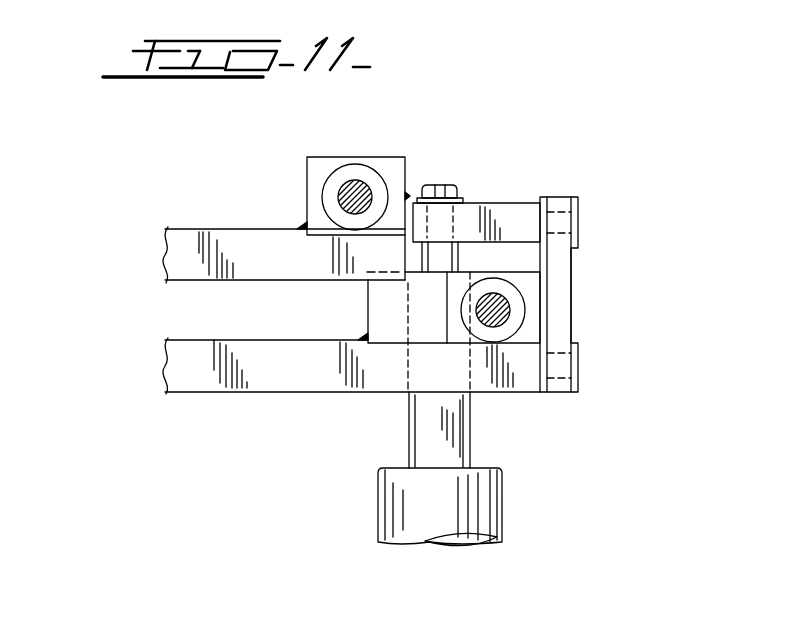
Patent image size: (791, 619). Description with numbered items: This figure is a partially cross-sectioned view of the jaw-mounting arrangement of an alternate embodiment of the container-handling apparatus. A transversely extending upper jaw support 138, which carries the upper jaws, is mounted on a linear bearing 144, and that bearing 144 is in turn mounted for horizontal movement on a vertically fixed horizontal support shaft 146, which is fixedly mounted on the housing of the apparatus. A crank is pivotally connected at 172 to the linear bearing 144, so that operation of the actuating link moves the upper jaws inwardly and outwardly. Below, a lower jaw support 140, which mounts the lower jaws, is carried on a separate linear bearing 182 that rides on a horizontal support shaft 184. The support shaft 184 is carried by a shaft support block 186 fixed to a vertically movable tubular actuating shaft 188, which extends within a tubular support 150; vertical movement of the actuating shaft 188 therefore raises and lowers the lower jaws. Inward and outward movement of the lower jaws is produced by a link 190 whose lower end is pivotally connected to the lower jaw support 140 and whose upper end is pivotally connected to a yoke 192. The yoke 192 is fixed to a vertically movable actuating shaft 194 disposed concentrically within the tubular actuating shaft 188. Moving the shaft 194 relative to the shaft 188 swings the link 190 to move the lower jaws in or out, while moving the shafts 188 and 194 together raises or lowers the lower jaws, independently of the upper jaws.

The upper jaw support 138 is at (250, 237).
The lower jaw support 140 is at (264, 383).
The linear bearing 144 is at (405, 158).
The horizontal support shaft 146 is at (357, 184).
The tubular support 150 is at (503, 505).
The pivotal connection 172 is at (414, 186).
The linear bearing 182 is at (533, 326).
The horizontal support shaft 184 is at (508, 302).
The shaft support block 186 is at (424, 338).
The tubular actuating shaft 188 is at (463, 412).
The link 190 is at (570, 266).
The yoke 192 is at (514, 204).
The actuating shaft 194 is at (447, 274).